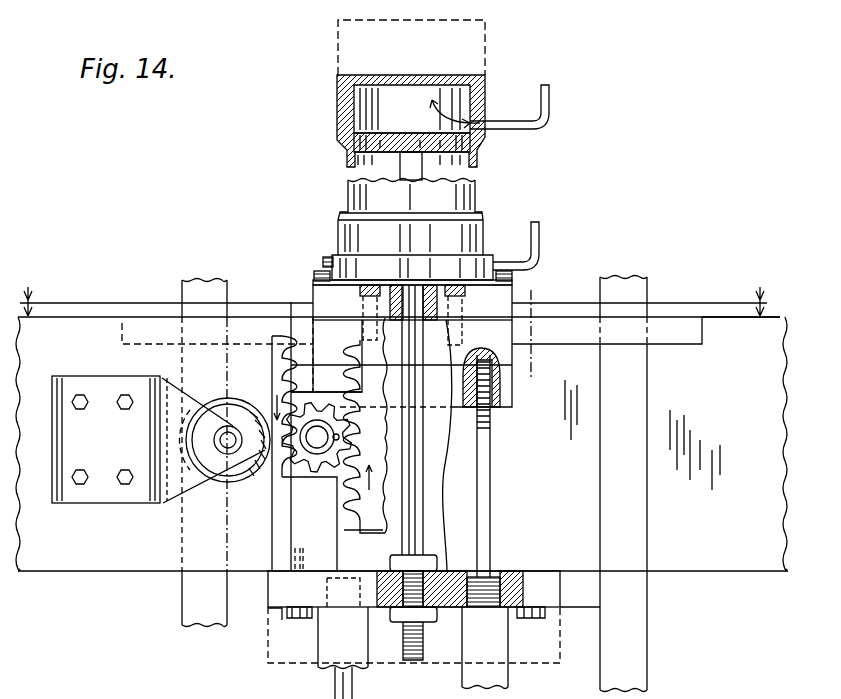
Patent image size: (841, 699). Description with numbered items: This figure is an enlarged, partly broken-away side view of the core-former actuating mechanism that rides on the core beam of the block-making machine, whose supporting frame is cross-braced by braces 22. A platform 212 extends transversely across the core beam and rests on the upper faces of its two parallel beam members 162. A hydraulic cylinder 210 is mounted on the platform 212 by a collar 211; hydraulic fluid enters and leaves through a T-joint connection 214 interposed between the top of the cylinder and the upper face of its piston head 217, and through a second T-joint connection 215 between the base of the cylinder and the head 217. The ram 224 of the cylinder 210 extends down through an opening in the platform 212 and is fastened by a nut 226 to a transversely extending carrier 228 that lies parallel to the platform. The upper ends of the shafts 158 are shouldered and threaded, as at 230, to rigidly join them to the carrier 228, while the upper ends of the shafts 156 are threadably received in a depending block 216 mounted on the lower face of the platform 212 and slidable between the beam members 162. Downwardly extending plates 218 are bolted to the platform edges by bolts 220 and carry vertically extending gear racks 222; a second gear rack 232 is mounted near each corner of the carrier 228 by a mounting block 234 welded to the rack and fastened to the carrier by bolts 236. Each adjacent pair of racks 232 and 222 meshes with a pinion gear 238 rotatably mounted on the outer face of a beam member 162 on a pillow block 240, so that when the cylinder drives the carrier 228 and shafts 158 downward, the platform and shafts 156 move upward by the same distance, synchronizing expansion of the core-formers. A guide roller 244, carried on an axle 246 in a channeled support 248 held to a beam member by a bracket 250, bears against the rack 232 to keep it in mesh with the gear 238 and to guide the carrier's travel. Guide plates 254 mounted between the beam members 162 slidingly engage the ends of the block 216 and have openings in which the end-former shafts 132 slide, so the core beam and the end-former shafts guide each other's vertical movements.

The brace 22 is at (402, 429).
The end-former shaft 132 is at (182, 290).
The shaft 156 is at (490, 552).
The shaft 158 is at (504, 645).
The beam member 162 is at (720, 550).
The hydraulic cylinder 210 is at (496, 78).
The collar 211 is at (322, 262).
The platform 212 is at (512, 293).
The T-joint connection 214 is at (505, 131).
The T-joint connection 215 is at (545, 242).
The depending block 216 is at (503, 390).
The piston head 217 is at (355, 144).
The plate 218 is at (377, 535).
The bolt 220 is at (392, 251).
The gear rack 222 is at (384, 507).
The ram 224 is at (424, 497).
The nut 226 is at (430, 620).
The carrier 228 is at (272, 595).
The shouldered and threaded portion 230 is at (514, 586).
The gear rack 232 is at (276, 335).
The mounting block 234 is at (320, 527).
The bolt 236 is at (288, 620).
The pinion gear 238 is at (312, 472).
The pillow block 240 is at (303, 395).
The guide roller 244 is at (243, 480).
The axle 246 is at (230, 433).
The channeled support 248 is at (172, 492).
The bracket 250 is at (100, 487).
The guide plate 254 is at (143, 332).